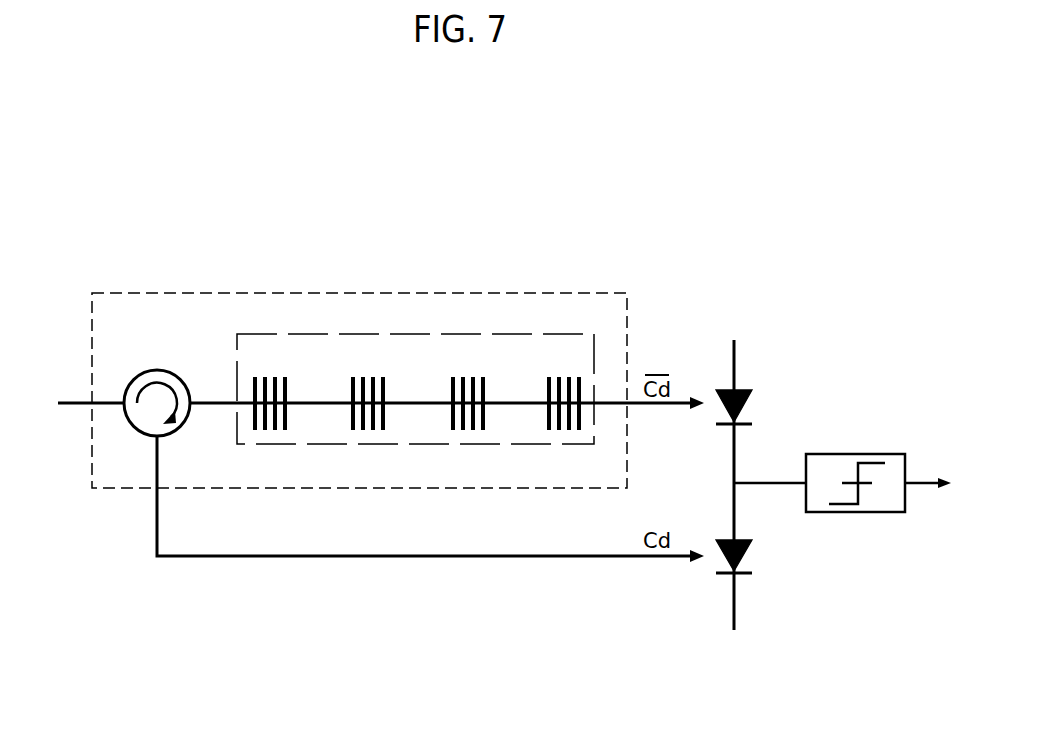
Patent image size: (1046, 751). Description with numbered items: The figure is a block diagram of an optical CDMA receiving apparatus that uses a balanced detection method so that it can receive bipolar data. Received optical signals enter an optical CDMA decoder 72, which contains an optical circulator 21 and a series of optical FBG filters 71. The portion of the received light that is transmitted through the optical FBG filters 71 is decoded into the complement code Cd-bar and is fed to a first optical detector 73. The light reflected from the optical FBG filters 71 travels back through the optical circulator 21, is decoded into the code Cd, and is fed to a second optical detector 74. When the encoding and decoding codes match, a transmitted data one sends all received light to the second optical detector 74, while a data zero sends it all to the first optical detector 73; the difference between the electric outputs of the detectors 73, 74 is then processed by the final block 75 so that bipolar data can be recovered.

The optical circulator 21 is at (155, 371).
The optical FBG filters 71 is at (527, 334).
The optical CDMA decoder 72 is at (549, 294).
The first optical detector 73 is at (752, 397).
The second optical detector 74 is at (752, 547).
The comparator / decision circuit 75 is at (857, 454).